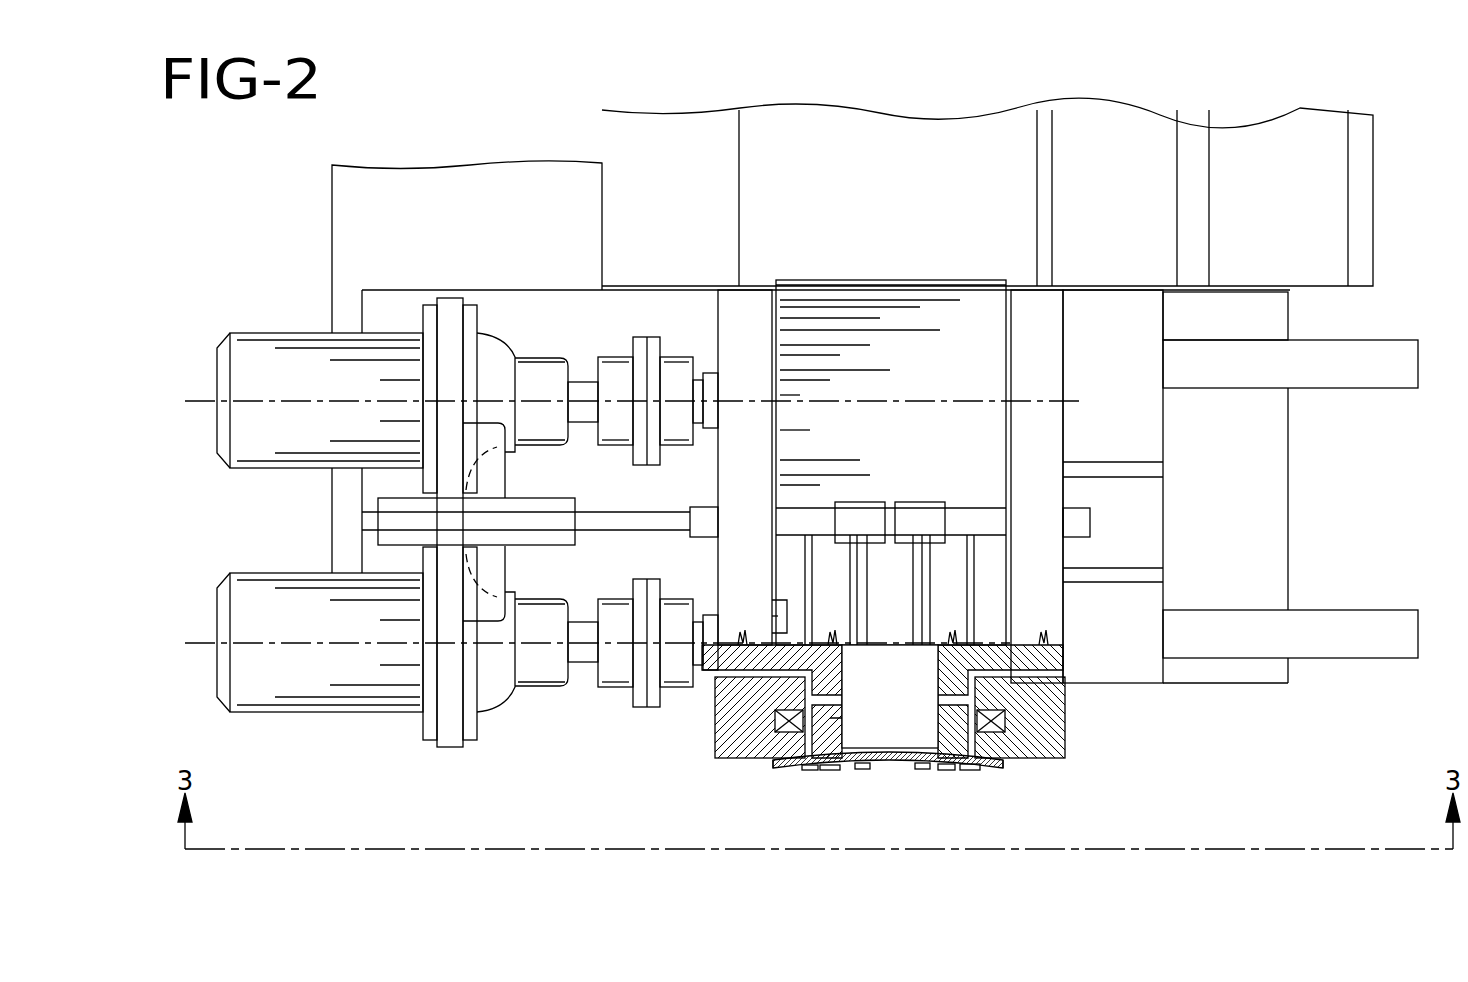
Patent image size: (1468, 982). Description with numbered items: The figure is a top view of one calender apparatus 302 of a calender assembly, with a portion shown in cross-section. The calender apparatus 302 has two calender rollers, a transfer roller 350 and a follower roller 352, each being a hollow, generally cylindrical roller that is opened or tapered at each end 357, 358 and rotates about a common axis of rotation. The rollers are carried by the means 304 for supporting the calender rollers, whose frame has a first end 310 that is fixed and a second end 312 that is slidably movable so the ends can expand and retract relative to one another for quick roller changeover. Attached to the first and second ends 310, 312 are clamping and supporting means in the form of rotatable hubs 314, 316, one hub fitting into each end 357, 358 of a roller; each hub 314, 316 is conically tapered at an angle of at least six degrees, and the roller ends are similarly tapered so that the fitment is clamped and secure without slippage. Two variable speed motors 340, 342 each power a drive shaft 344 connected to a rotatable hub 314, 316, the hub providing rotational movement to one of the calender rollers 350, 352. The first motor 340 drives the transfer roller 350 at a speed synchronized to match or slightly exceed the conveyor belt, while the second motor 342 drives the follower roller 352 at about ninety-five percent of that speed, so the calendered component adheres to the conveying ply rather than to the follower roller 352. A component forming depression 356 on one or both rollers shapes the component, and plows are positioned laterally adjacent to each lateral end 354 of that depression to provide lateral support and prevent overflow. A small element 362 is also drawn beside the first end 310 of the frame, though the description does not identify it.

The calender apparatus 302 is at (535, 158).
The means for supporting the calender rollers 304 is at (1063, 440).
The first end 310 is at (748, 333).
The second end 312 is at (1035, 335).
The rotatable hub 314 is at (788, 749).
The rotatable hub 316 is at (985, 740).
The first motor 340 is at (266, 612).
The second motor 342 is at (266, 372).
The drive shaft 344 is at (608, 373).
The transfer roller 350 is at (988, 763).
The follower roller 352 is at (893, 337).
The lateral end 354 is at (812, 770).
The component forming depression 356 is at (833, 770).
The end 357 is at (771, 766).
The end 358 is at (1002, 767).
The stop member 362 is at (775, 608).